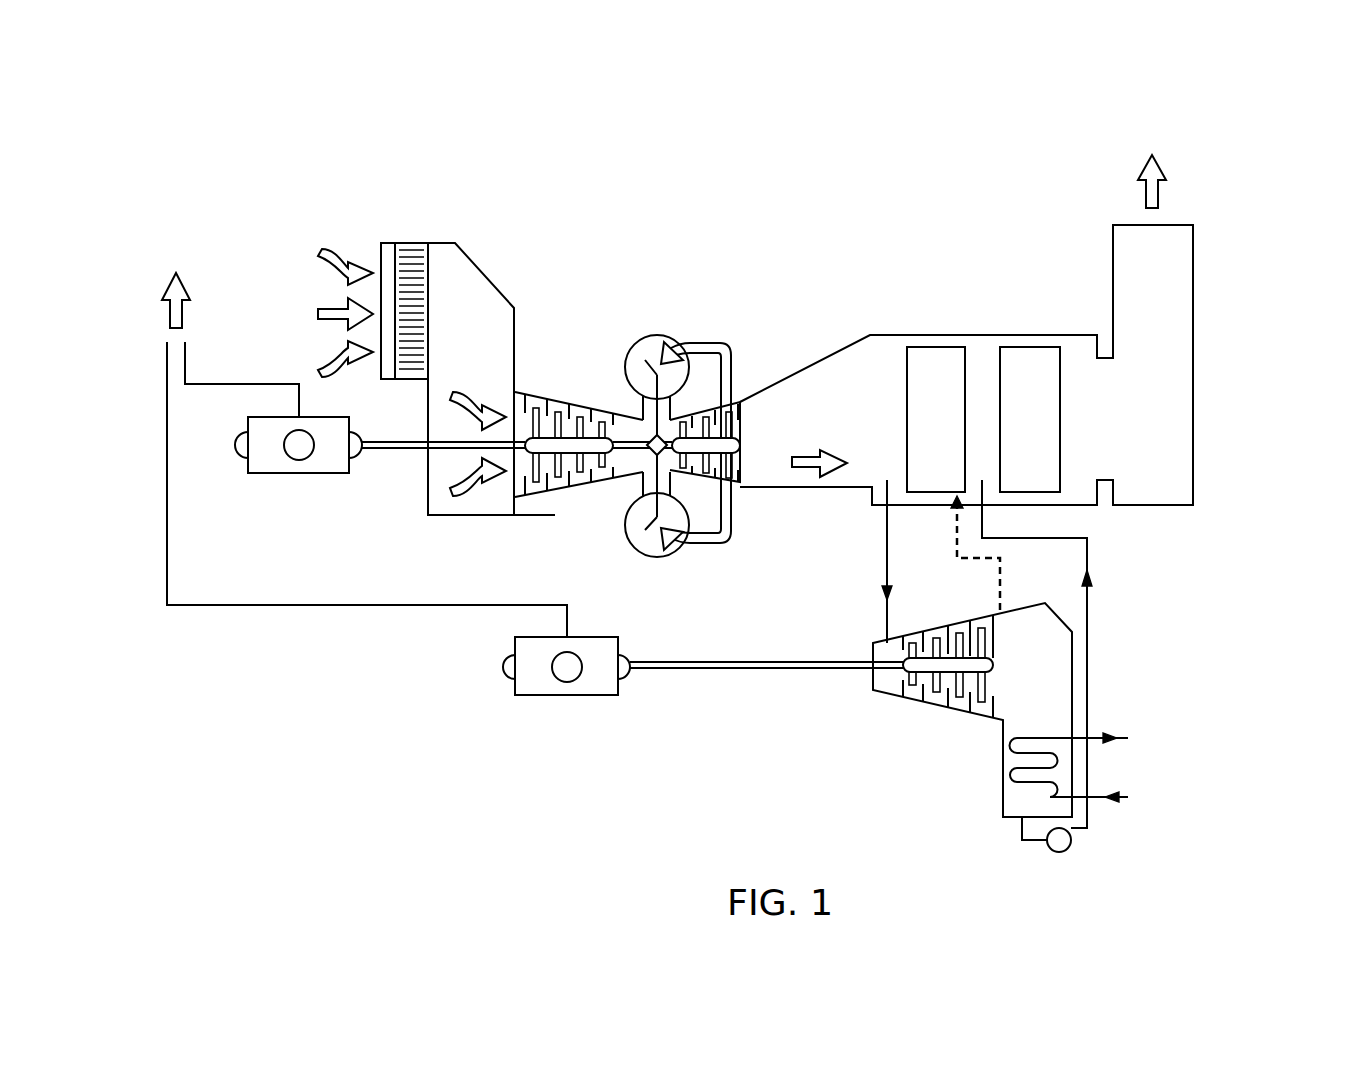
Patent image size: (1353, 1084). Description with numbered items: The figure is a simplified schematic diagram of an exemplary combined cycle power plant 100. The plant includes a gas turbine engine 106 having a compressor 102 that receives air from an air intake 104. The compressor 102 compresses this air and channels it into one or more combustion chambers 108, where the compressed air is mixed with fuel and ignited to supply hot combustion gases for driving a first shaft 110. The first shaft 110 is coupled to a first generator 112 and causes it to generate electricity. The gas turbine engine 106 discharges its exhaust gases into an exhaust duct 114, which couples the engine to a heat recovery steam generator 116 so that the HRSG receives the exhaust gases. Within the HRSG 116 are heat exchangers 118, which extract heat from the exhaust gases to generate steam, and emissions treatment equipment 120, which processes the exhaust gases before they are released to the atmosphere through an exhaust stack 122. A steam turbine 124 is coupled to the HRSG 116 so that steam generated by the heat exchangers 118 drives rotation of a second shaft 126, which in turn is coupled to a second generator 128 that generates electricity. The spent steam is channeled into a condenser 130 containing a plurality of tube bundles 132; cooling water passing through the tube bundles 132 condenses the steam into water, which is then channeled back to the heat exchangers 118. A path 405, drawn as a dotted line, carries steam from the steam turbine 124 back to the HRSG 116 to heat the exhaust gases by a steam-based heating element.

The combined cycle power plant 100 is at (358, 138).
The compressor 102 is at (558, 400).
The air intake 104 is at (413, 243).
The gas turbine engine 106 is at (571, 380).
The combustion chambers 108 is at (662, 334).
The first shaft 110 is at (390, 452).
The first generator 112 is at (299, 474).
The exhaust duct 114 is at (772, 369).
The heat recovery steam generator 116 is at (1012, 311).
The heat exchangers 118 is at (903, 358).
The emissions treatment equipment 120 is at (1060, 455).
The exhaust stack 122 is at (1193, 283).
The steam turbine 124 is at (958, 620).
The second shaft 126 is at (745, 669).
The second generator 128 is at (567, 696).
The condenser 130 is at (1002, 768).
The tube bundles 132 is at (1012, 789).
The path 405 is at (1000, 575).